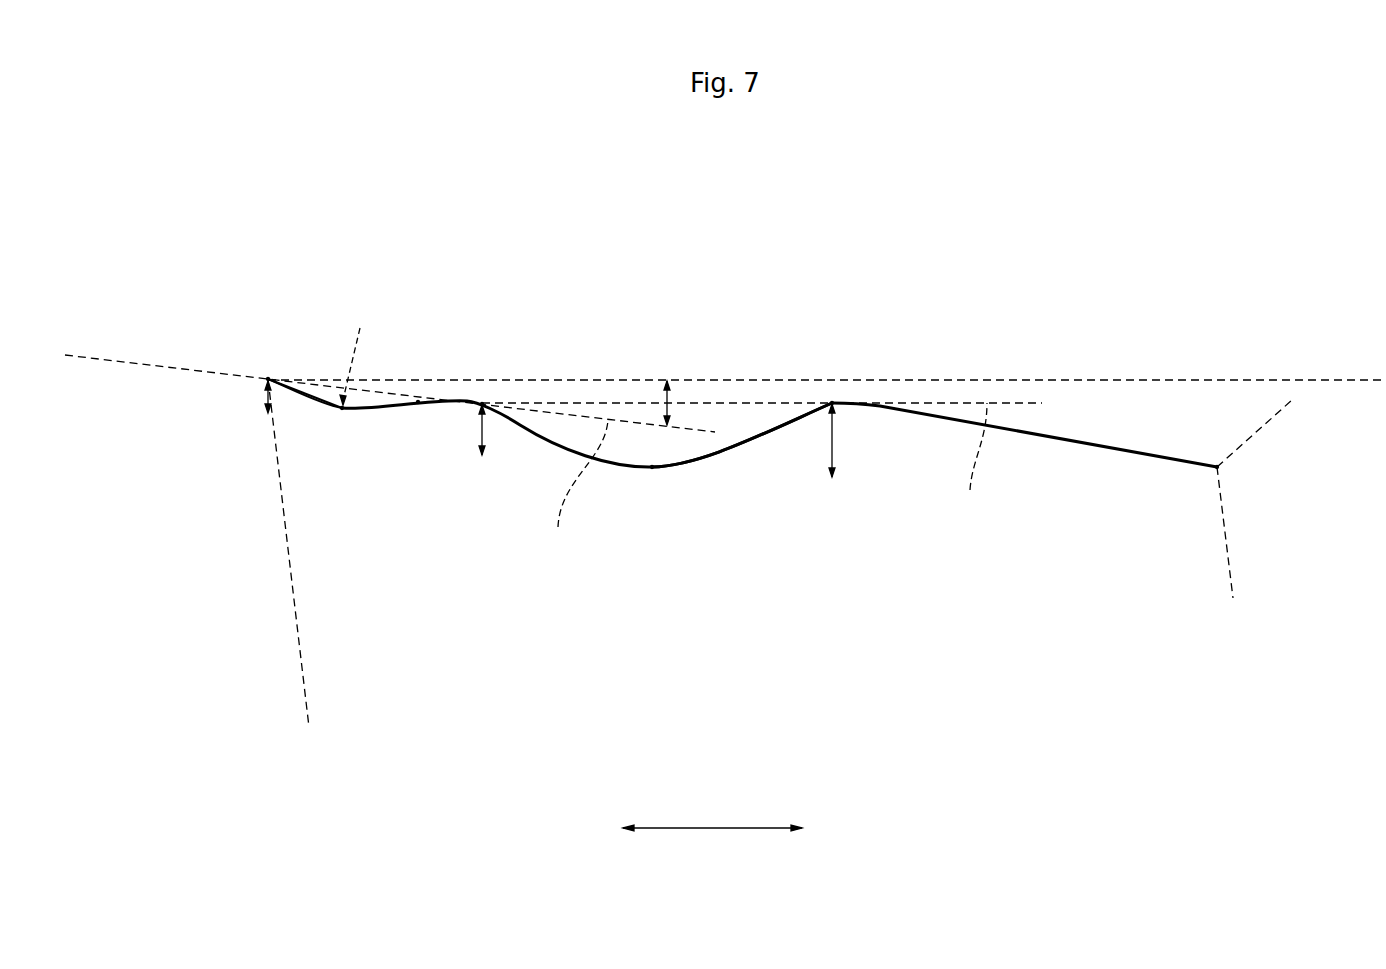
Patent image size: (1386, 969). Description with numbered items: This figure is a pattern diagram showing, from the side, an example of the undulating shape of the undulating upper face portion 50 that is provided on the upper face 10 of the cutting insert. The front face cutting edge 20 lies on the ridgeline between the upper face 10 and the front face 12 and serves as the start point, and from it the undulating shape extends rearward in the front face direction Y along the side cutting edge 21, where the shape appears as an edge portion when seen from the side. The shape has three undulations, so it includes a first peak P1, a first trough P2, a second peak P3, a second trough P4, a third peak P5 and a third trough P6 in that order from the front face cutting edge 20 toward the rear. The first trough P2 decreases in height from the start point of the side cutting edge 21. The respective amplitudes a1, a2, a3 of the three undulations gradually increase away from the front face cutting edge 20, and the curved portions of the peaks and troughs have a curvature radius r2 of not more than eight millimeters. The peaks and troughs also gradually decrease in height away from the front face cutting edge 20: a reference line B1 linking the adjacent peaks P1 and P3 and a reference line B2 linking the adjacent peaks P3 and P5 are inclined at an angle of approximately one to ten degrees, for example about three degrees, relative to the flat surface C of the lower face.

The front face cutting edge 20 is at (268, 379).
The side cutting edge 21 is at (555, 424).
The upper face 10 is at (757, 432).
The undulating upper face portion 50 is at (900, 404).
The flat surface C is at (1042, 380).
The front face 12 is at (293, 602).
The reference line B1 is at (580, 492).
The reference line B2 is at (982, 463).
The first peak P1 is at (268, 379).
The first trough P2 is at (342, 410).
The second peak P3 is at (482, 403).
The second trough P4 is at (652, 468).
The third peak P5 is at (832, 403).
The third trough P6 is at (1217, 467).
The curvature radius r2 is at (366, 366).
The amplitude a1 is at (247, 399).
The amplitude a2 is at (464, 430).
The amplitude a3 is at (849, 440).
The front face direction Y is at (712, 810).